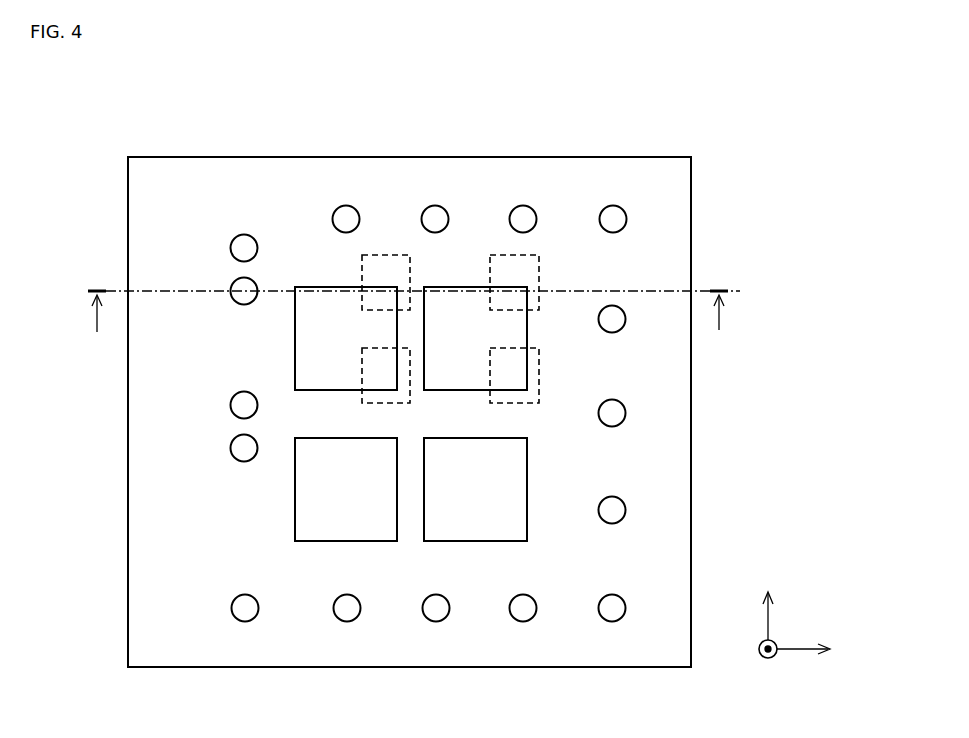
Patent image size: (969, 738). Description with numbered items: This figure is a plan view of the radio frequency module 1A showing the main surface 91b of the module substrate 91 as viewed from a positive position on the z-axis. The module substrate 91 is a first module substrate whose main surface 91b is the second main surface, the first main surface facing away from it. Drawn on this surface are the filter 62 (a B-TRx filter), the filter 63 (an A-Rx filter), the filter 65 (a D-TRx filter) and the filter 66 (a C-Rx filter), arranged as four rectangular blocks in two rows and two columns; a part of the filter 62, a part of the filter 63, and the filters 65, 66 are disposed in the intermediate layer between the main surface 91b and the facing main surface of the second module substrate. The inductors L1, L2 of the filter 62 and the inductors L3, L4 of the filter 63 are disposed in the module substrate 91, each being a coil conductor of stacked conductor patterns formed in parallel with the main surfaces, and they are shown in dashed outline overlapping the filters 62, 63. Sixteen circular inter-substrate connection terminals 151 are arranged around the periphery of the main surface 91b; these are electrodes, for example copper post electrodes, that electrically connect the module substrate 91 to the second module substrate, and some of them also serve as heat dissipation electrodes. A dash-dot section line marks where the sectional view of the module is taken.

The radio frequency module 1A is at (744, 126).
The module substrate 91 is at (300, 157).
The main surface 91b is at (641, 164).
The inter-substrate connection terminal 151 is at (616, 207).
The filter 62 is at (324, 287).
The filter 63 is at (442, 287).
The filter 65 is at (320, 438).
The filter 66 is at (455, 438).
The inductor L1 is at (386, 255).
The inductor L2 is at (390, 404).
The inductor L3 is at (514, 255).
The inductor L4 is at (518, 404).